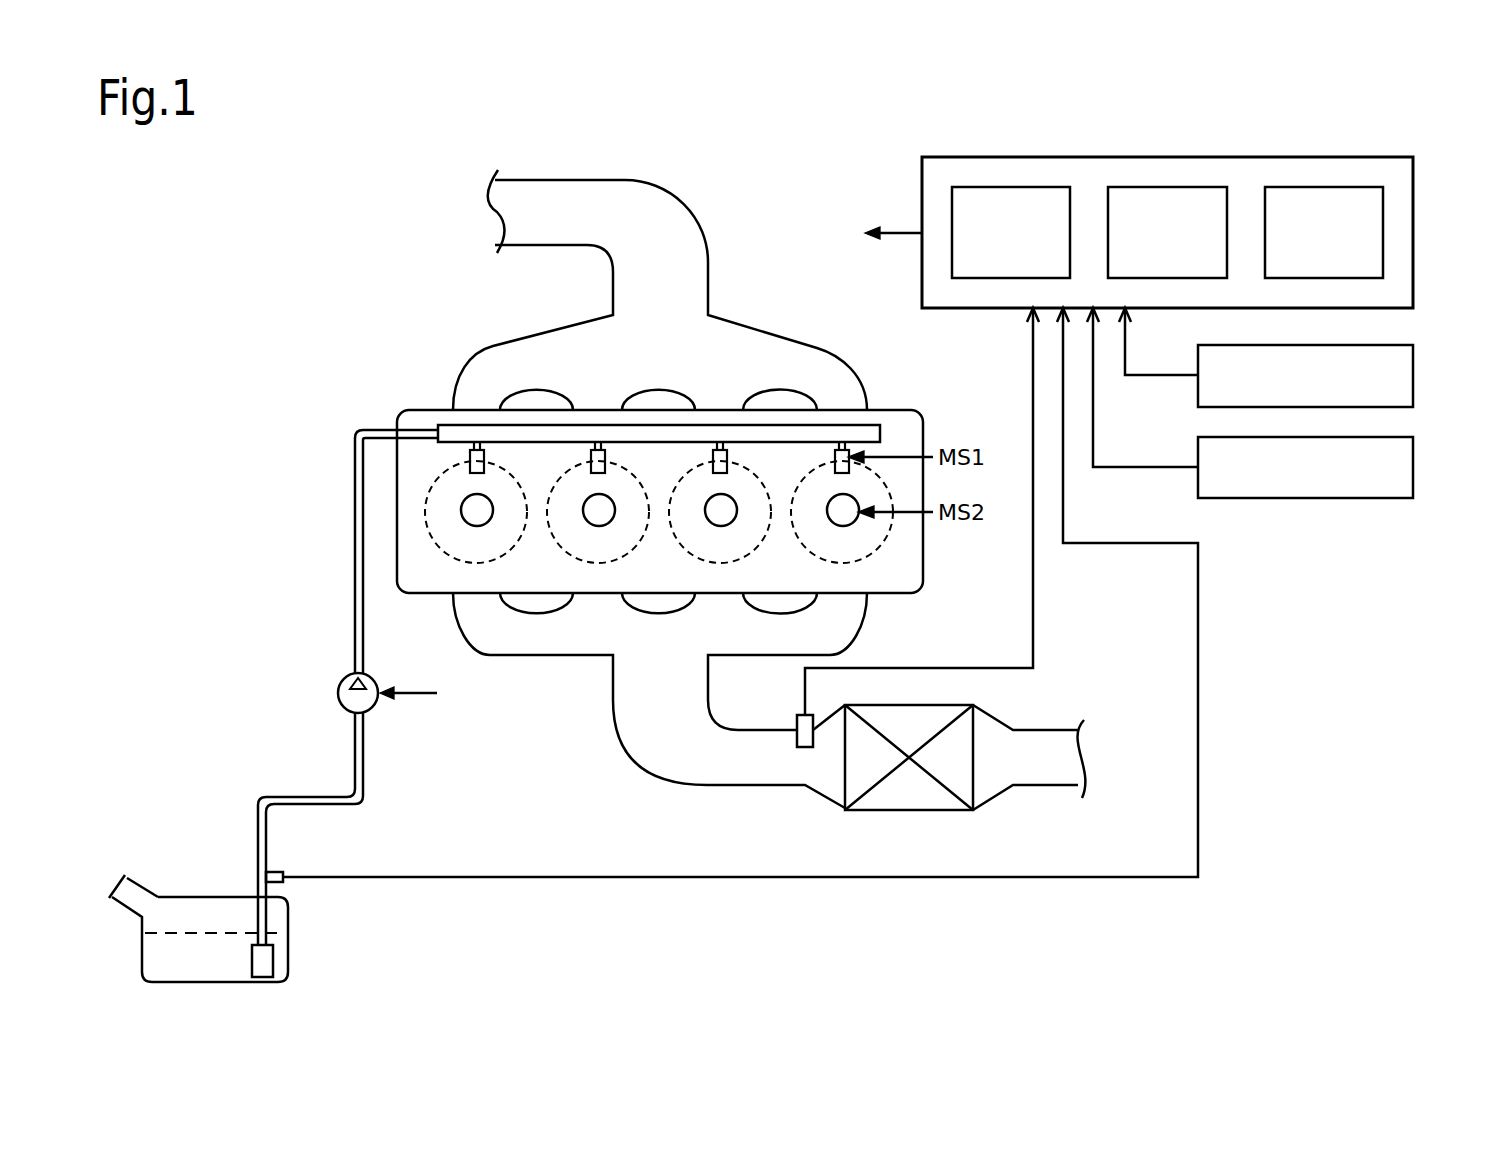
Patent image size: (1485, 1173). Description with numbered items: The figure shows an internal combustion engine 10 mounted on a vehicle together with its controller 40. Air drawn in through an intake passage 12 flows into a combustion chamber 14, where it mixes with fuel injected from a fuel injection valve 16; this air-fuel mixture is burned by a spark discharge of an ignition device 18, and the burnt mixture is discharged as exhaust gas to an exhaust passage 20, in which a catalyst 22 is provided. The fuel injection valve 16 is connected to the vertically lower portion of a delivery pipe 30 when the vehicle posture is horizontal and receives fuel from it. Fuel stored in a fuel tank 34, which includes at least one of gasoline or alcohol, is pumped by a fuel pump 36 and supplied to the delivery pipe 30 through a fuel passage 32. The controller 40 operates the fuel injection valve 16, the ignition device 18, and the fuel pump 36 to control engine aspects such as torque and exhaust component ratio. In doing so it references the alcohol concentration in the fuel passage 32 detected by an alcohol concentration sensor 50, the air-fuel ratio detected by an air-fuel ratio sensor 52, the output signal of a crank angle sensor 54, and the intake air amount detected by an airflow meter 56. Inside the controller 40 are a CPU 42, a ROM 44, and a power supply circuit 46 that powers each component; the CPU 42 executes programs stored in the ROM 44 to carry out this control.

The internal combustion engine 10 is at (730, 127).
The intake passage 12 is at (553, 248).
The combustion chamber 14 is at (503, 482).
The fuel injection valve 16 is at (468, 456).
The ignition device 18 is at (487, 524).
The exhaust passage 20 is at (852, 628).
The catalyst 22 is at (912, 797).
The delivery pipe 30 is at (871, 408).
The fuel passage 32 is at (380, 428).
The fuel tank 34 is at (284, 906).
The fuel pump 36 is at (372, 708).
The controller 40 is at (1388, 157).
The CPU 42 is at (1010, 187).
The ROM 44 is at (1167, 187).
The power supply circuit 46 is at (1322, 187).
The alcohol concentration sensor 50 is at (277, 870).
The air-fuel ratio sensor 52 is at (797, 716).
The crank angle sensor 54 is at (1414, 381).
The airflow meter 56 is at (1414, 473).